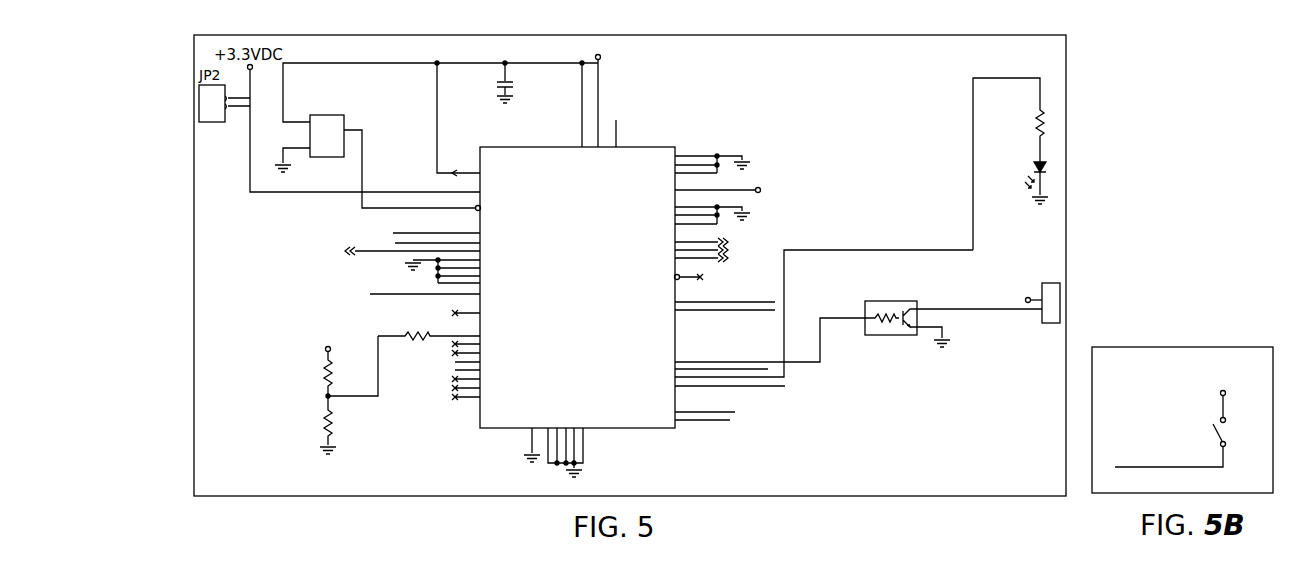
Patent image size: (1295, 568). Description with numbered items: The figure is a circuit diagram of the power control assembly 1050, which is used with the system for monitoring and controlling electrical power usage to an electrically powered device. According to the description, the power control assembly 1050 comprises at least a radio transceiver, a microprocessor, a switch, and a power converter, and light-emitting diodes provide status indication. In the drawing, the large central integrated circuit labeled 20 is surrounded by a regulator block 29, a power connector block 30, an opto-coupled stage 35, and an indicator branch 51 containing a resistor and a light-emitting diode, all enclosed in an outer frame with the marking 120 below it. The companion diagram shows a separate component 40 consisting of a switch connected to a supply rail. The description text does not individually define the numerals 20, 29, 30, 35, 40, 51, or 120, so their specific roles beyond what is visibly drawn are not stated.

In FIG. 5, the microcontroller U6 20 is at (634, 147).
In FIG. 5, the voltage regulator U5 29 is at (336, 114).
In FIG. 5, the power connector J4 30 is at (1032, 268).
In FIG. 5, the opto-isolator 35 is at (888, 301).
In FIG. 5B, the switch circuit S1 40 is at (1140, 338).
In FIG. 5, the LED indicator circuit 51 is at (982, 66).
In FIG. 5, the circuit board 120 is at (923, 559).
In FIG. 5, the power control assembly 1050 is at (1130, 75).